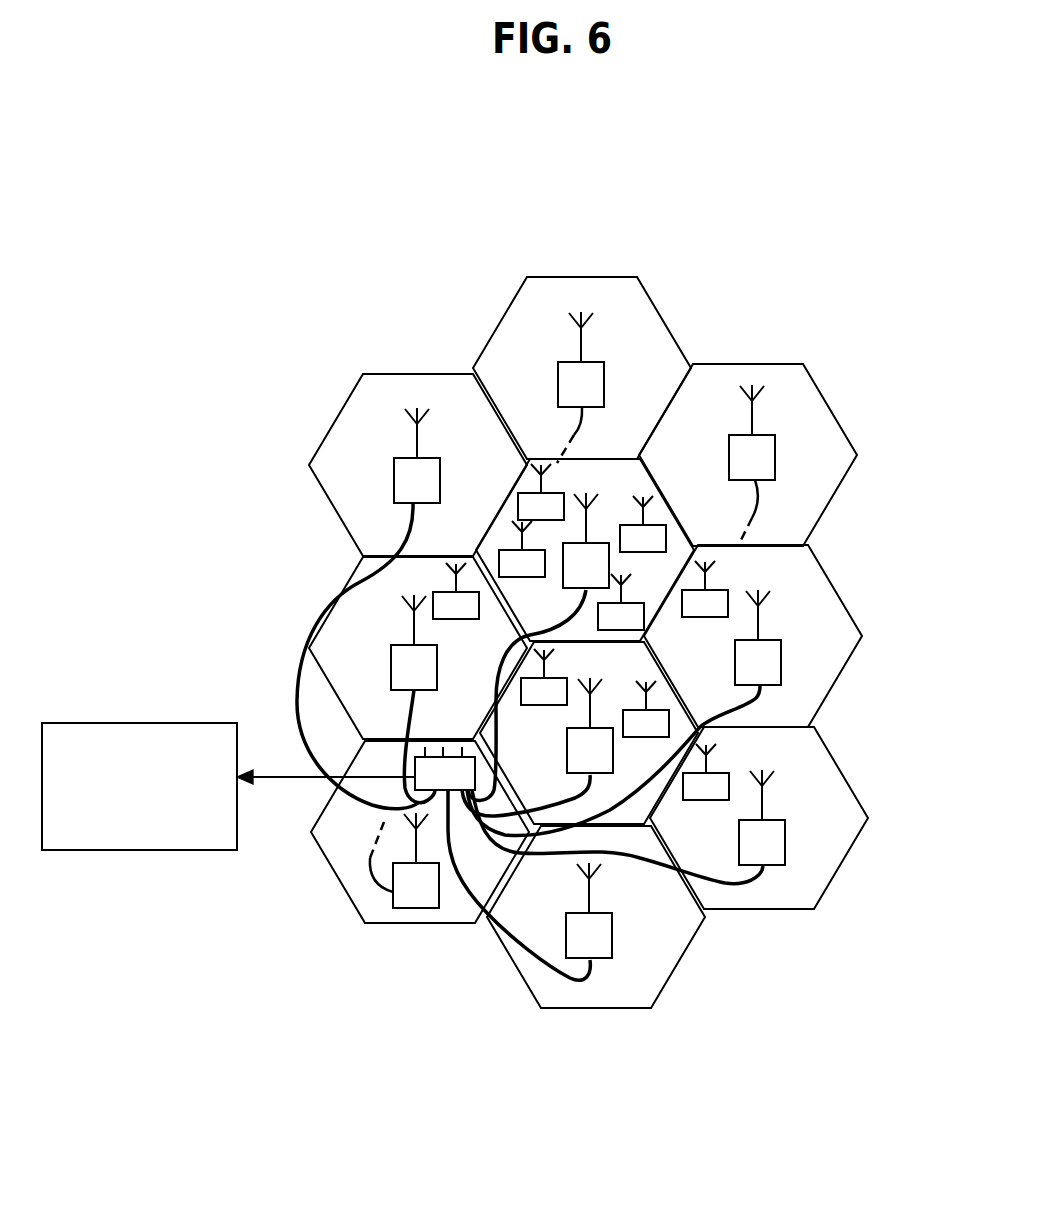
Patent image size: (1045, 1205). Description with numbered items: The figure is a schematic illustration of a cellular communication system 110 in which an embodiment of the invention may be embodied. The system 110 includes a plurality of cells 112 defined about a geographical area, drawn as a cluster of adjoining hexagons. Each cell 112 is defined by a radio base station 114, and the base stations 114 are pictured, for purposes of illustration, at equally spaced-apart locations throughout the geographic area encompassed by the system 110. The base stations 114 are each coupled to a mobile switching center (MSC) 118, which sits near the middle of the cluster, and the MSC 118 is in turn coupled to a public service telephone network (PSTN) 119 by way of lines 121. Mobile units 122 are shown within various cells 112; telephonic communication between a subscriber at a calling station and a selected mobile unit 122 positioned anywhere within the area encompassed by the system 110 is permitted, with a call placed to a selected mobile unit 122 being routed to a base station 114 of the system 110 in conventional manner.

The cellular communication system 110 is at (331, 275).
The cell 112 is at (410, 372).
The radio base station 114 is at (563, 547).
The mobile switching center (MSC) 118 is at (452, 750).
The public service telephone network (PSTN) 119 is at (122, 723).
The lines 121 is at (278, 777).
The mobile unit 122 is at (562, 493).